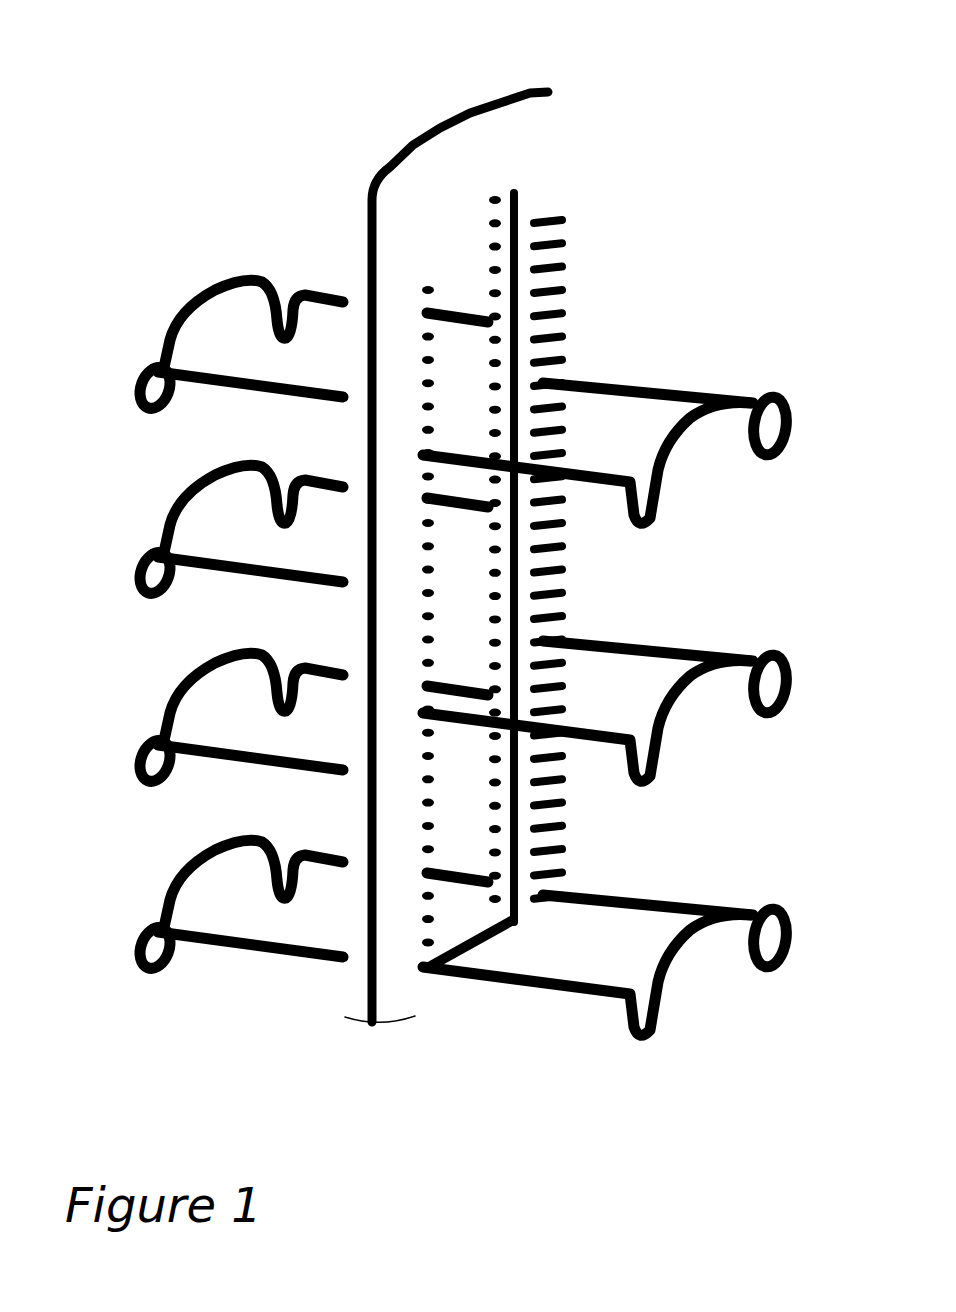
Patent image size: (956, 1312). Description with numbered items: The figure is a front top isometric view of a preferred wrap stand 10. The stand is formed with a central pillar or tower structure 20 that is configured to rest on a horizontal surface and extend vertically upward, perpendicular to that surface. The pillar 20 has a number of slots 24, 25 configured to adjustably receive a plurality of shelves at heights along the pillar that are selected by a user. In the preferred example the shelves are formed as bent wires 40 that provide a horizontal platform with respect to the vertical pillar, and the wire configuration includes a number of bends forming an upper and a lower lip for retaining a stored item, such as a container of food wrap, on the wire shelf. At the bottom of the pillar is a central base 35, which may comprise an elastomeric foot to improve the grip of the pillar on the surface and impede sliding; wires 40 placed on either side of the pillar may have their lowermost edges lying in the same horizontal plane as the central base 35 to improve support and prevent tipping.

The wrap stand 10 is at (722, 191).
The central pillar 20 is at (563, 77).
The slots 24 is at (555, 320).
The slots 25 is at (427, 336).
The central base 35 is at (383, 1025).
The bent wires 40 is at (638, 384).